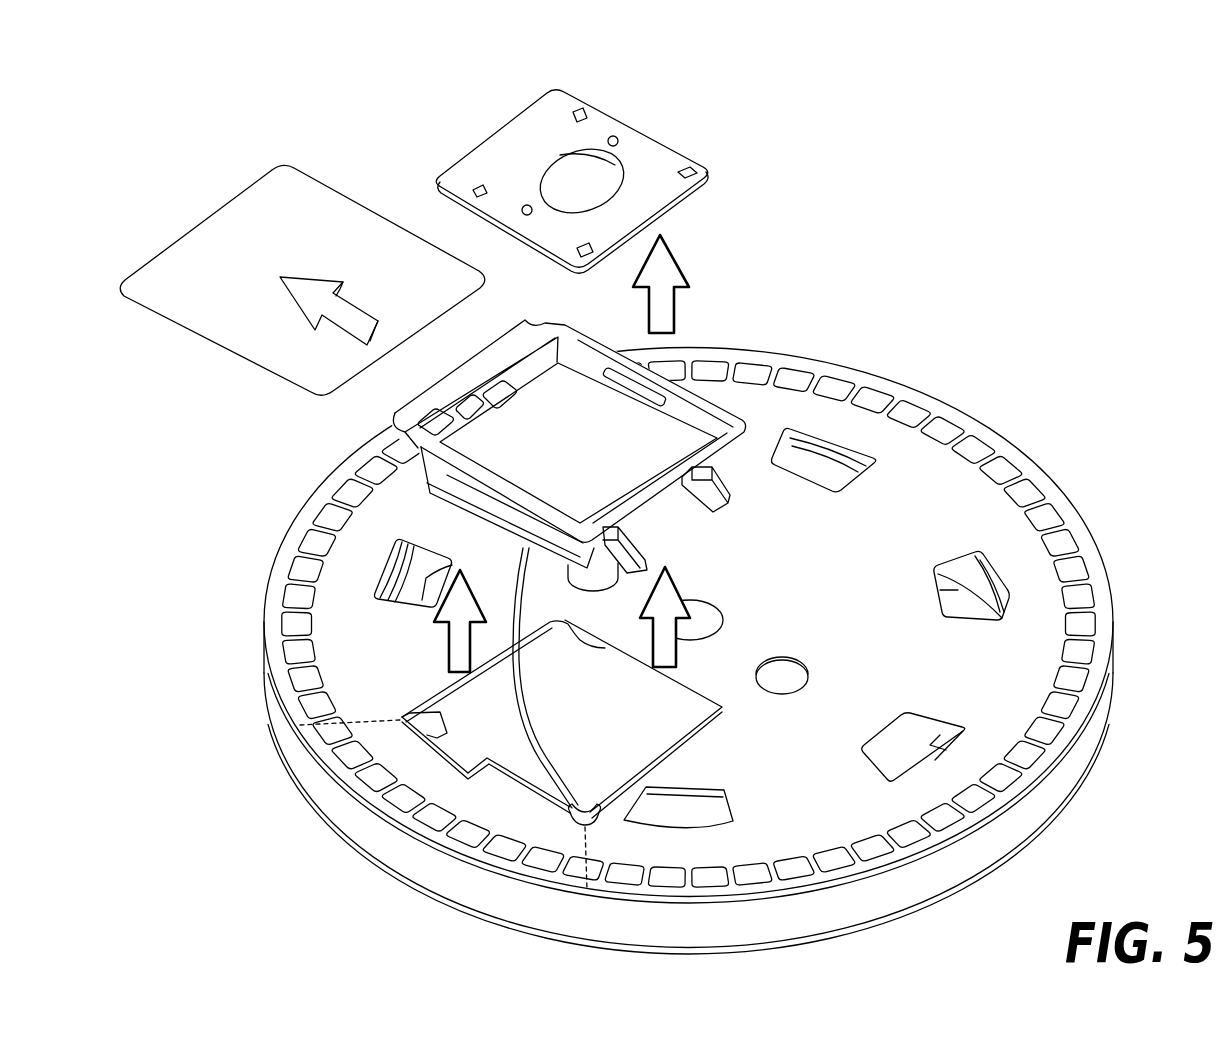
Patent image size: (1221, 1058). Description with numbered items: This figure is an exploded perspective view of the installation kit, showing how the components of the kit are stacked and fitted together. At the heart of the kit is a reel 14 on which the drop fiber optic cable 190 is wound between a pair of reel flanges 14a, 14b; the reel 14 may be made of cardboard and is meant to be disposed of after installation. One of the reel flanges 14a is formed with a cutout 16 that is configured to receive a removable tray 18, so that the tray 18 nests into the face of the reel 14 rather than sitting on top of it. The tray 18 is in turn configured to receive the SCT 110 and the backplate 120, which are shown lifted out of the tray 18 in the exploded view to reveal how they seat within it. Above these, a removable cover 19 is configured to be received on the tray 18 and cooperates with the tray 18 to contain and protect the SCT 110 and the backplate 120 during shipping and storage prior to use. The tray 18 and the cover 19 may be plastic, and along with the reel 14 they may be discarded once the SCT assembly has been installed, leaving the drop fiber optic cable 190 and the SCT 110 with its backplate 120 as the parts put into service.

The reel 14 is at (979, 488).
The reel flange 14a is at (1105, 604).
The reel flange 14b is at (1083, 758).
The cutout 16 is at (690, 753).
The removable tray 18 is at (766, 420).
The removable cover 19 is at (302, 235).
The SCT 110 is at (633, 471).
The backplate 120 is at (625, 108).
The drop fiber optic cable 190 is at (537, 743).